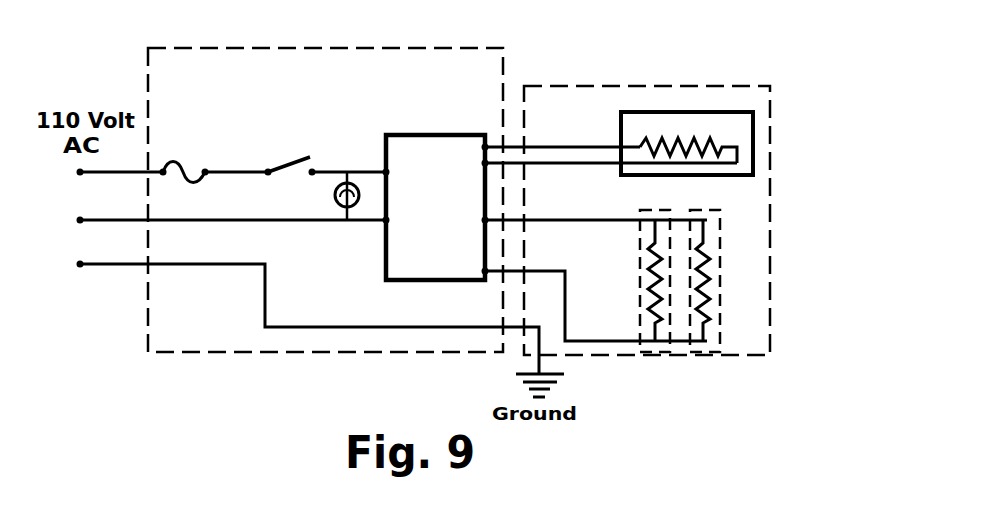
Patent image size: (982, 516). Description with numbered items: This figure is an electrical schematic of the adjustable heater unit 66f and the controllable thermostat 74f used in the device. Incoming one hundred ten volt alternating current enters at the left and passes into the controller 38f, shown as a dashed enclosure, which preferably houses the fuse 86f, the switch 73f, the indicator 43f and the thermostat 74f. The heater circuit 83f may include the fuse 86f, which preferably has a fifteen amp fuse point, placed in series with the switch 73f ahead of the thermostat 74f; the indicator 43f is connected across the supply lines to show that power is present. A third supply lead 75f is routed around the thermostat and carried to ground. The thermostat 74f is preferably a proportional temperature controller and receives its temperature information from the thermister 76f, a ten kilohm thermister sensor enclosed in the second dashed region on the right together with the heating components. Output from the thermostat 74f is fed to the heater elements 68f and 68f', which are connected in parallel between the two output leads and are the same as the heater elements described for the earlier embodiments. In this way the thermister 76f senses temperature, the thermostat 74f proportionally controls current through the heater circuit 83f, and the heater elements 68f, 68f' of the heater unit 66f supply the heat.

The controller 38f is at (330, 48).
The fuse 86f is at (194, 170).
The switch 73f is at (283, 165).
The controllable thermostat 74f is at (455, 134).
The indicator 43f is at (348, 208).
The ground wire 75f is at (98, 268).
The thermister 76f is at (710, 110).
The heater element 68f is at (621, 280).
The heater element 68f' is at (768, 280).
The heater circuit 83f is at (627, 343).
The heater unit 66f is at (680, 360).